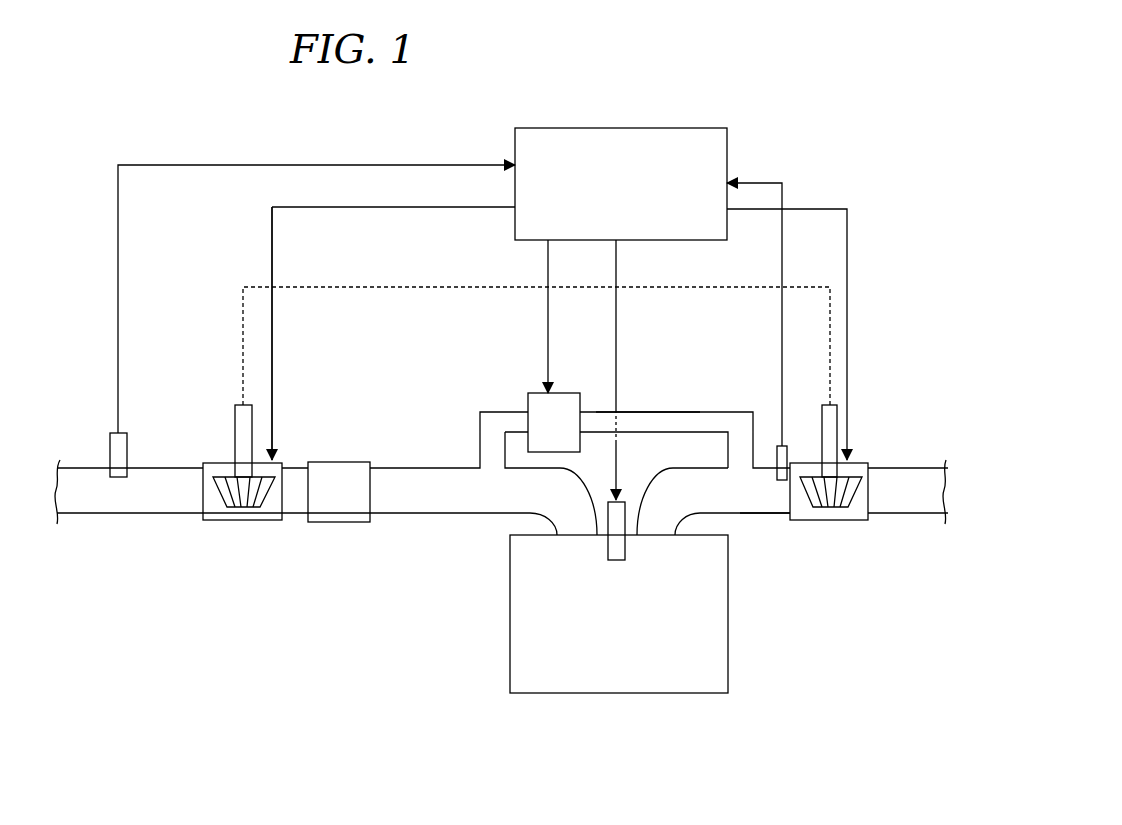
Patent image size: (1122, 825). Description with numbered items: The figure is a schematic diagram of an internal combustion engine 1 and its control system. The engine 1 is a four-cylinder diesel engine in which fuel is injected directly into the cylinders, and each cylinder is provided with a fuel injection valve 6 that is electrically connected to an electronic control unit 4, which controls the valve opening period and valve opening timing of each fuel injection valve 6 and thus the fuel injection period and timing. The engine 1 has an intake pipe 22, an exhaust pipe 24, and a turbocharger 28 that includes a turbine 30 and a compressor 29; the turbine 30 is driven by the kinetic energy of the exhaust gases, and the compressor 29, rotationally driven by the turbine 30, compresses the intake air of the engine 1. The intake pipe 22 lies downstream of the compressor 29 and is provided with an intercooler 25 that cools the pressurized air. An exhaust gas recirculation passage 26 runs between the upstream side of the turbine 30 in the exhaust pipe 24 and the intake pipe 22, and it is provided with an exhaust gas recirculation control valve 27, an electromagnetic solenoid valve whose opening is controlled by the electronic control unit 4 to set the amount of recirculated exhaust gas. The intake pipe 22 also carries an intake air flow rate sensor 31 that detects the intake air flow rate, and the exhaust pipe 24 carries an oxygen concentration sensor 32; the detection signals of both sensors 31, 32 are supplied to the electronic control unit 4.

The internal combustion engine 1 is at (607, 695).
The electronic control unit 4 is at (570, 128).
The fuel injection valve 6 is at (627, 500).
The intake pipe 22 is at (442, 468).
The exhaust pipe 24 is at (775, 515).
The intercooler 25 is at (338, 460).
The exhaust gas recirculation passage 26 is at (648, 410).
The exhaust gas recirculation control valve 27 is at (573, 393).
The turbocharger 28 is at (228, 440).
The compressor 29 is at (248, 522).
The turbine 30 is at (853, 522).
The intake air flow rate sensor 31 is at (112, 432).
The oxygen concentration sensor 32 is at (780, 443).